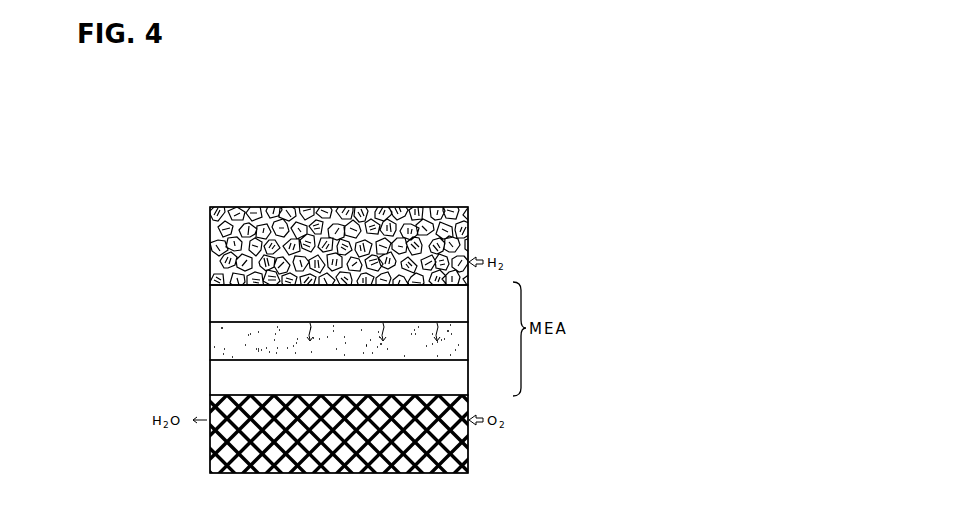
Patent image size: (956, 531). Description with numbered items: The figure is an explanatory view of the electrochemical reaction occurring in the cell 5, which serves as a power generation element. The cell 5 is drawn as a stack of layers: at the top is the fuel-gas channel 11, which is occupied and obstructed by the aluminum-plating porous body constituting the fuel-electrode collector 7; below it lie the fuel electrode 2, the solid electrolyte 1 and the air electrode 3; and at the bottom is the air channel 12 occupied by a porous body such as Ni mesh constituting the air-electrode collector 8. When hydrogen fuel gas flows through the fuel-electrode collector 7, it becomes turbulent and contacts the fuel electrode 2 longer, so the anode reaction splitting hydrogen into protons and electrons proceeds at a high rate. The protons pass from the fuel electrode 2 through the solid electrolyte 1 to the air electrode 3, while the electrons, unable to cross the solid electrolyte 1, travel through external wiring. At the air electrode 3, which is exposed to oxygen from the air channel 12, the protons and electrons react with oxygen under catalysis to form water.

The cell 5 is at (585, 473).
The fuel-electrode collector 7 is at (469, 238).
The fuel-gas channel 11 is at (203, 249).
The fuel electrode 2 is at (469, 296).
The solid electrolyte 1 is at (469, 341).
The air electrode 3 is at (469, 383).
The air-electrode collector 8 is at (469, 438).
The air channel 12 is at (203, 446).